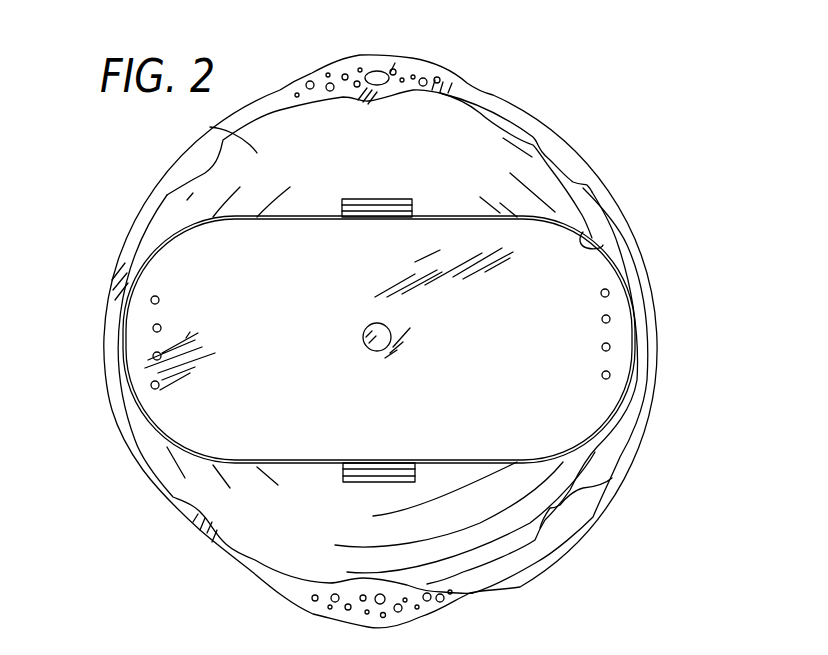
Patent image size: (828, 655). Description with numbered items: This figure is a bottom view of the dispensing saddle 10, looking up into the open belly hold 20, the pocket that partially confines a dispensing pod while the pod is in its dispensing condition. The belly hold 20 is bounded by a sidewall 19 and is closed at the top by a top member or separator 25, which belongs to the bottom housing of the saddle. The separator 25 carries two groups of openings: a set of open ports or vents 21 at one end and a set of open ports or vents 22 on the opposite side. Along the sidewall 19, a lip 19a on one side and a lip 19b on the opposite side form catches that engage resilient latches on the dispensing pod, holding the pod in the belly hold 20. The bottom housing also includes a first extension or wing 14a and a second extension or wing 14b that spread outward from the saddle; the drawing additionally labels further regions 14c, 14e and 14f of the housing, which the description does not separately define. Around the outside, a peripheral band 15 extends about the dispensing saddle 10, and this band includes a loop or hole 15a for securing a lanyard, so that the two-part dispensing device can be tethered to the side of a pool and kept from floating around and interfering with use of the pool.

The dispensing saddle 10 is at (609, 146).
The first extension or wing 14a is at (483, 540).
The second extension or wing 14b is at (217, 133).
The rim section 14c is at (560, 512).
The rim section 14e is at (205, 177).
The rim section 14f is at (560, 168).
The peripheral band 15 is at (535, 133).
The loop or hole 15a is at (378, 71).
The sidewall 19 is at (603, 248).
The lip 19a is at (385, 471).
The lip 19b is at (388, 216).
The open belly hold 20 is at (415, 410).
The open ports or vents 21 is at (611, 373).
The open ports or vents 22 is at (150, 385).
The top member or separator 25 is at (570, 397).